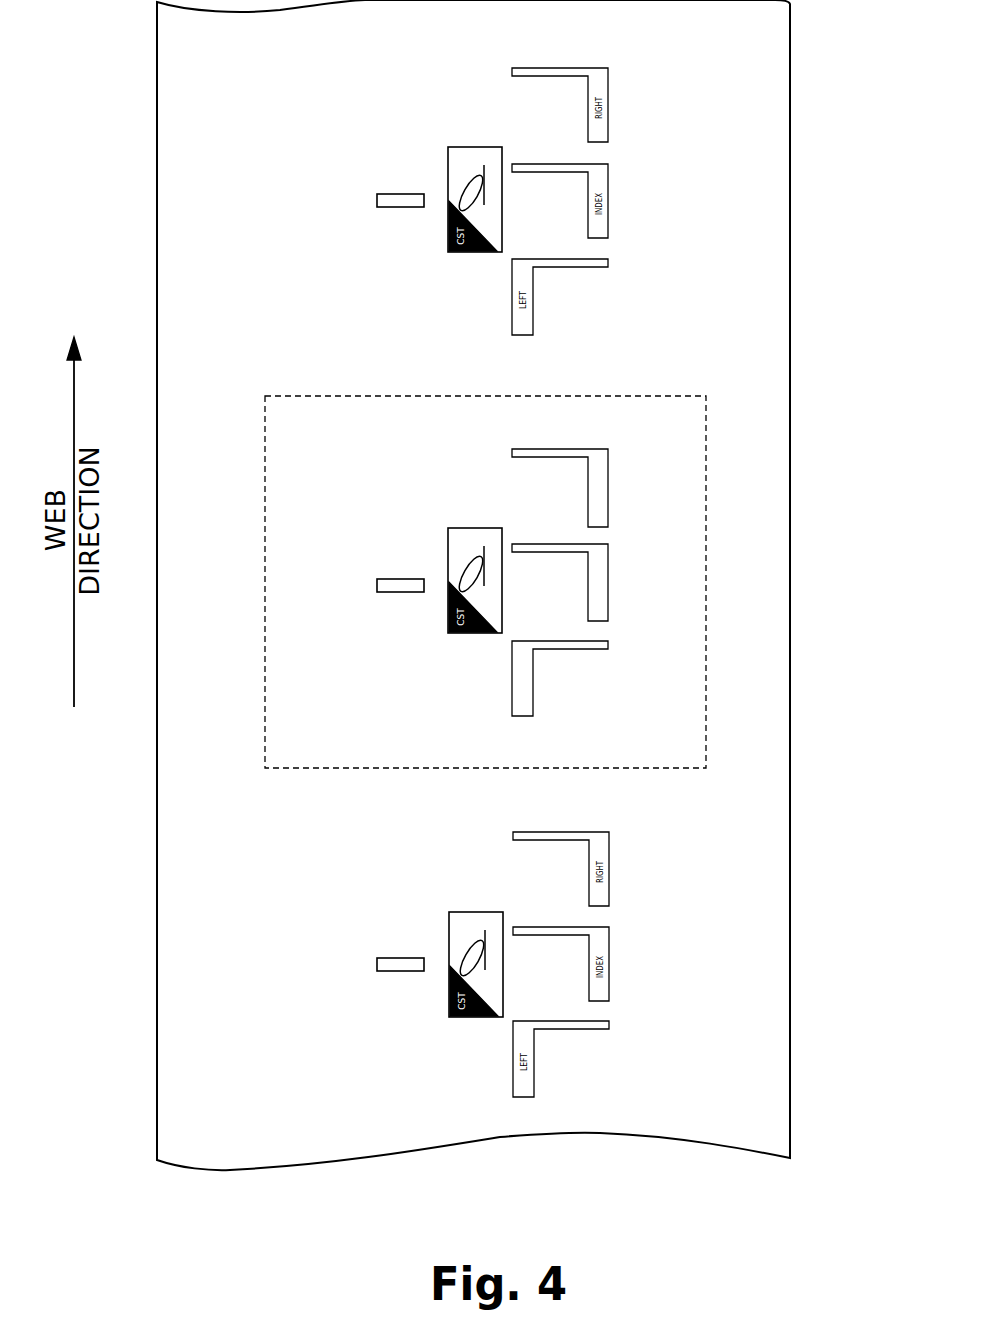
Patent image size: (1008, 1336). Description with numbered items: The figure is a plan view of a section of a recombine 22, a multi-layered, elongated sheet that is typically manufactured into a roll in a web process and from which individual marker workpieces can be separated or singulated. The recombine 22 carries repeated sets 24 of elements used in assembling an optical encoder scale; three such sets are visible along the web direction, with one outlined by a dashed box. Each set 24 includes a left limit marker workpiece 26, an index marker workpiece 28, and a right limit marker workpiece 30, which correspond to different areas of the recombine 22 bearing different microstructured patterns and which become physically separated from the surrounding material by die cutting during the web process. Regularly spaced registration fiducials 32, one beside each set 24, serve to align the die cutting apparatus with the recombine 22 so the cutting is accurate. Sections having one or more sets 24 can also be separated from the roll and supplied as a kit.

The recombine 22 is at (258, 141).
The set 24 is at (365, 471).
The left limit marker workpiece 26 is at (530, 663).
The index marker workpiece 28 is at (610, 560).
The right limit marker workpiece 30 is at (610, 458).
The registration fiducials 32 is at (400, 200).